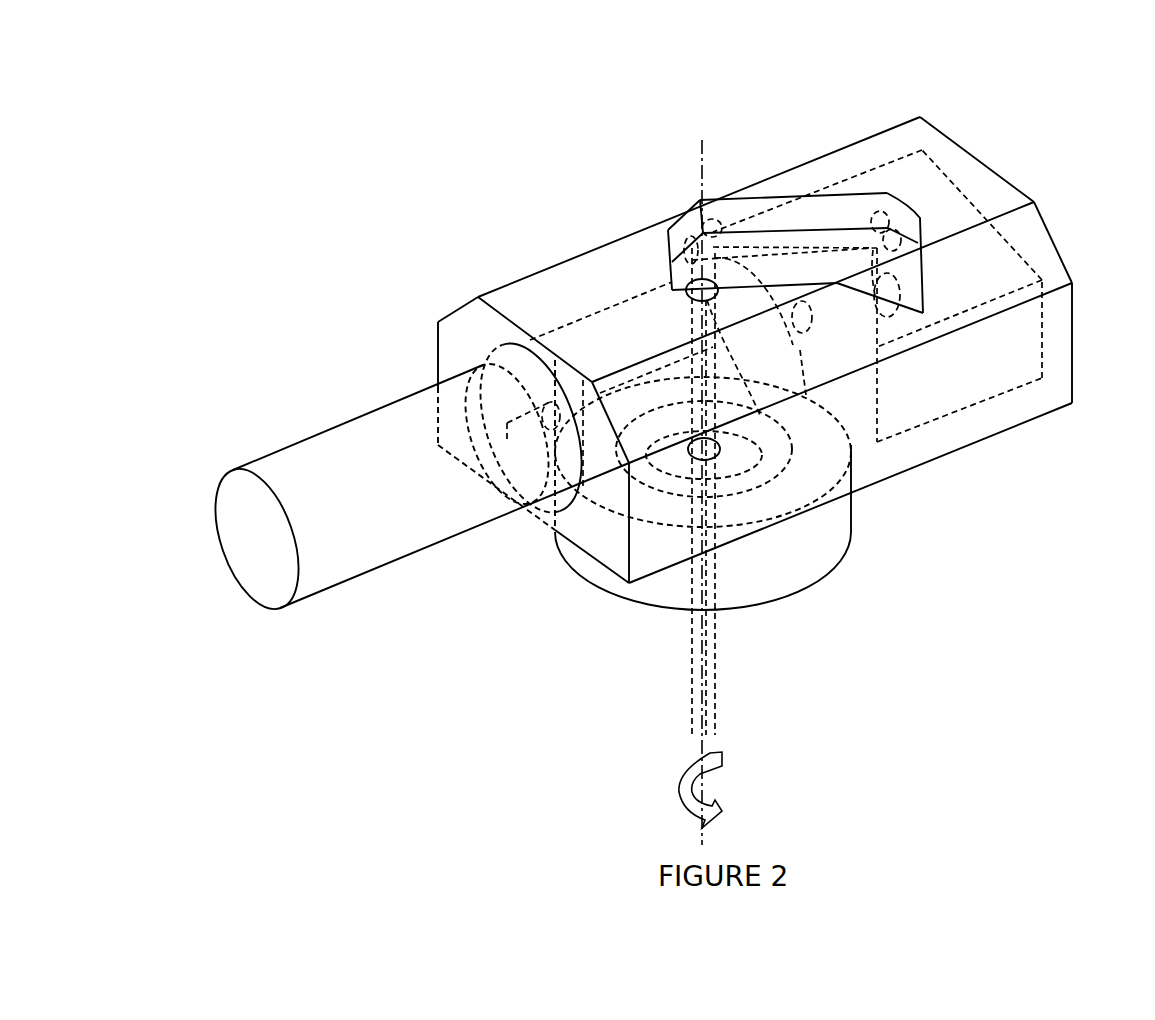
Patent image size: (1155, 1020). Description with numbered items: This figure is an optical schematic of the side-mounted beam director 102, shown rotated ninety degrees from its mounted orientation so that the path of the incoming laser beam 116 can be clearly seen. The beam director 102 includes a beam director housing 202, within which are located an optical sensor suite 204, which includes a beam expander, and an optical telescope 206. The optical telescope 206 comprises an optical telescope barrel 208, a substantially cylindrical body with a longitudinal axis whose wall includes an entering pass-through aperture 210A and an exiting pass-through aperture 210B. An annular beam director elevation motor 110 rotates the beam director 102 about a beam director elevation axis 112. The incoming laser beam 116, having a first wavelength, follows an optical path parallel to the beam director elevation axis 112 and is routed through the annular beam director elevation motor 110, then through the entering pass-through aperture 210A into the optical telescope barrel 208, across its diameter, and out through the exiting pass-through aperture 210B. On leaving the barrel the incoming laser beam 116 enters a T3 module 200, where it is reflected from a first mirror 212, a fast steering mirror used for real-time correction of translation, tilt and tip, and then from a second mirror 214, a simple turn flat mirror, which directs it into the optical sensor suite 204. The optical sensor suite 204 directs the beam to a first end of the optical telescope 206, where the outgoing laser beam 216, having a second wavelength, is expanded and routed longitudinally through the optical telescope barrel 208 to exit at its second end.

The beam director 102 is at (753, 466).
The beam director elevation motor 110 is at (838, 563).
The beam director elevation axis 112 is at (705, 152).
The incoming laser beam 116 is at (843, 240).
The T3 module 200 is at (837, 208).
The beam director housing 202 is at (1017, 428).
The optical sensor suite 204 is at (1015, 257).
The optical telescope 206 is at (466, 360).
The optical telescope barrel 208 is at (560, 322).
The entering pass-through aperture 210A is at (722, 459).
The exiting pass-through aperture 210B is at (687, 289).
The first mirror 212 is at (690, 226).
The second mirror 214 is at (897, 235).
The outgoing laser beam 216 is at (392, 507).